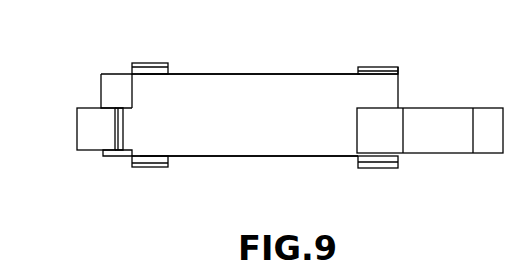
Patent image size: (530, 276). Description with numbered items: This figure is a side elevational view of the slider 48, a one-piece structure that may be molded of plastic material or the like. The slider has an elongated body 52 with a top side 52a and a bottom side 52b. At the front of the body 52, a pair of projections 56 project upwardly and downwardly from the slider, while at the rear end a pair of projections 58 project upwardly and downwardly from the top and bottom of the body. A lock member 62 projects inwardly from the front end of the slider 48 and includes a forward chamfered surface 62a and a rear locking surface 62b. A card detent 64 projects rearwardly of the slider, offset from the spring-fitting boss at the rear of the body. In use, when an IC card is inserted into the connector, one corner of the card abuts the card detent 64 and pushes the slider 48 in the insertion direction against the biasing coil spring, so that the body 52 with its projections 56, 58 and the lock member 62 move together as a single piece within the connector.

The slider 48 is at (273, 118).
The elongated body 52 is at (250, 140).
The top side 52a is at (245, 74).
The bottom side 52b is at (313, 157).
The pair of projections 56 is at (145, 62).
The pair of projections 58 is at (372, 65).
The lock member 62 is at (134, 128).
The forward chamfered surface 62a is at (88, 120).
The rear locking surface 62b is at (122, 127).
The card detent 64 is at (423, 108).